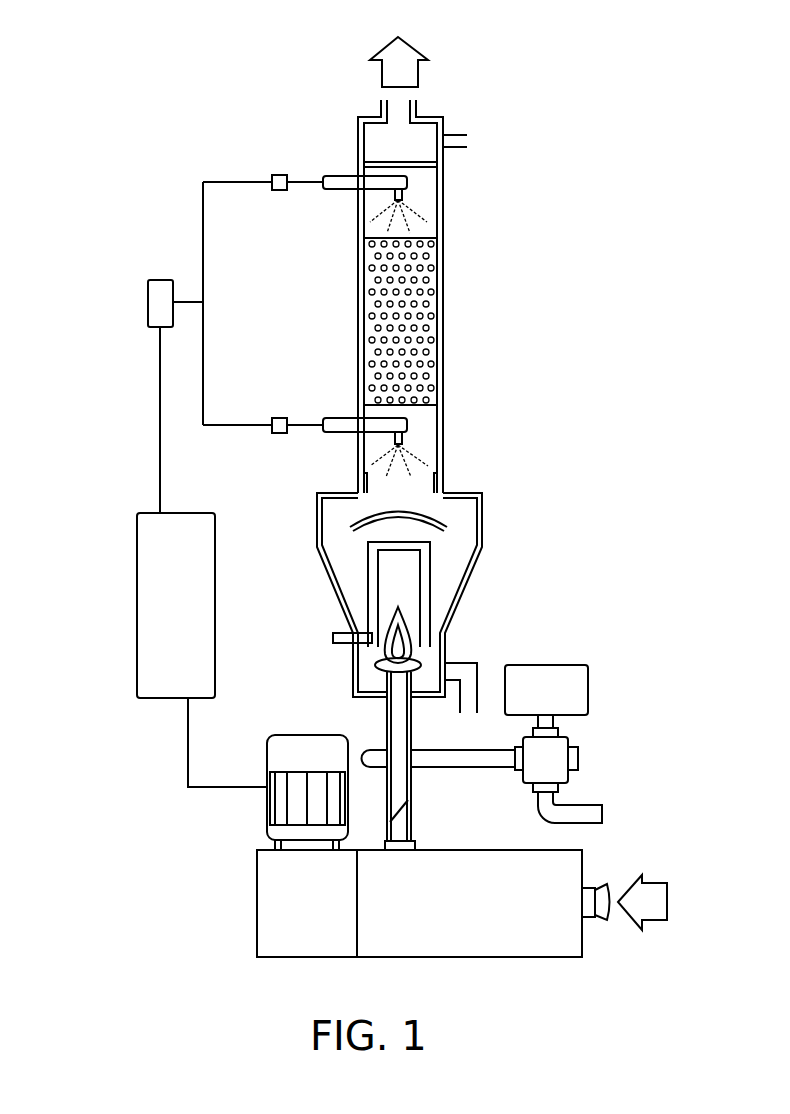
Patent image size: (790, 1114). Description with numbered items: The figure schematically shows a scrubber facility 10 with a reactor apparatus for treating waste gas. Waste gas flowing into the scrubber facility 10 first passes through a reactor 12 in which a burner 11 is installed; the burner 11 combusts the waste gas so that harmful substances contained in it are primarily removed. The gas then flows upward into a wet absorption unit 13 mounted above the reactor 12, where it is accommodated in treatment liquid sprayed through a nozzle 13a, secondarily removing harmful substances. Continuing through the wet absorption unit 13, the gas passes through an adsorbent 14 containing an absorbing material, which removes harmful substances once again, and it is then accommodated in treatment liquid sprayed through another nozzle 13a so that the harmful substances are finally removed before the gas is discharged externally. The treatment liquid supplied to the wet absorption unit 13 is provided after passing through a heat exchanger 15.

The scrubber facility 10 is at (265, 26).
The burner 11 is at (372, 657).
The reactor 12 is at (482, 515).
The wet absorption unit 13 is at (443, 280).
The nozzle 13a is at (408, 183).
The adsorbent 14 is at (412, 332).
The heat exchanger 15 is at (137, 652).